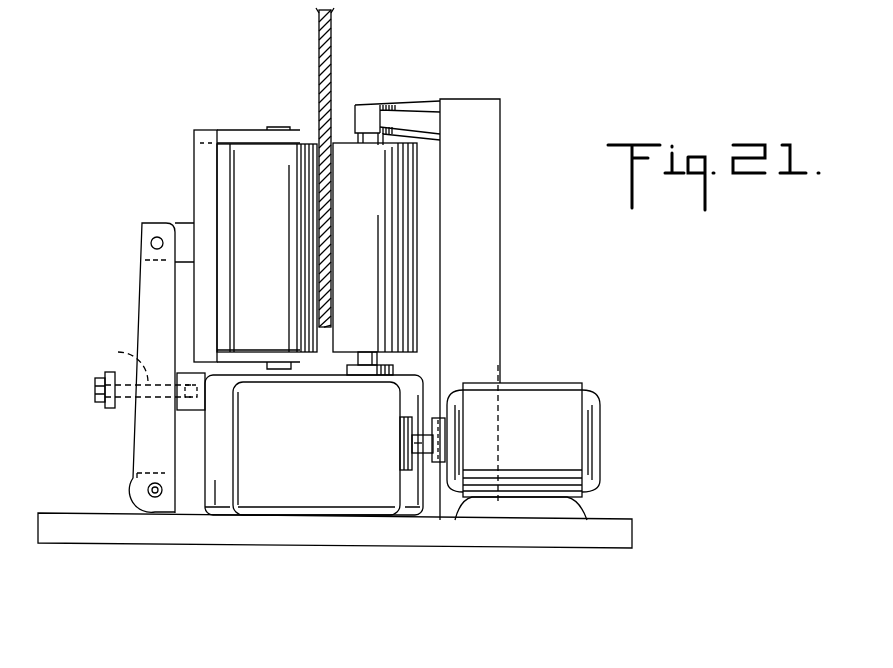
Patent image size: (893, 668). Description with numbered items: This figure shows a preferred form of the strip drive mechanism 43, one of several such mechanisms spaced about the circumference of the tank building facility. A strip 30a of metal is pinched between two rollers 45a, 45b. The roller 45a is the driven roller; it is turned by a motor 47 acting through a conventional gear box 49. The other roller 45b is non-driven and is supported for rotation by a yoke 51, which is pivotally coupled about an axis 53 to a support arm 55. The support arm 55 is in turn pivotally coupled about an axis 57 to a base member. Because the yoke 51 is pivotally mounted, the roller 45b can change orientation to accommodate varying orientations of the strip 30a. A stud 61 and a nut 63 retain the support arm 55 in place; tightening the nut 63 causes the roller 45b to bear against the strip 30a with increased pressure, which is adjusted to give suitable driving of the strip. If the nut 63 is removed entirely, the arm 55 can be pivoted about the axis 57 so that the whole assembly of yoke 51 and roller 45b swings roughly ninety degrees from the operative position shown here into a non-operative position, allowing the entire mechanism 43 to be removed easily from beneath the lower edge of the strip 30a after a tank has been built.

The strip 30a is at (331, 46).
The strip drive mechanism 43 is at (521, 123).
The roller 45a is at (400, 250).
The roller 45b is at (295, 300).
The motor 47 is at (505, 437).
The gear box 49 is at (307, 493).
The yoke 51 is at (237, 130).
The axis 53 is at (157, 237).
The support arm 55 is at (145, 288).
The axis 57 is at (147, 490).
The stud 61 is at (120, 347).
The nut 63 is at (95, 390).